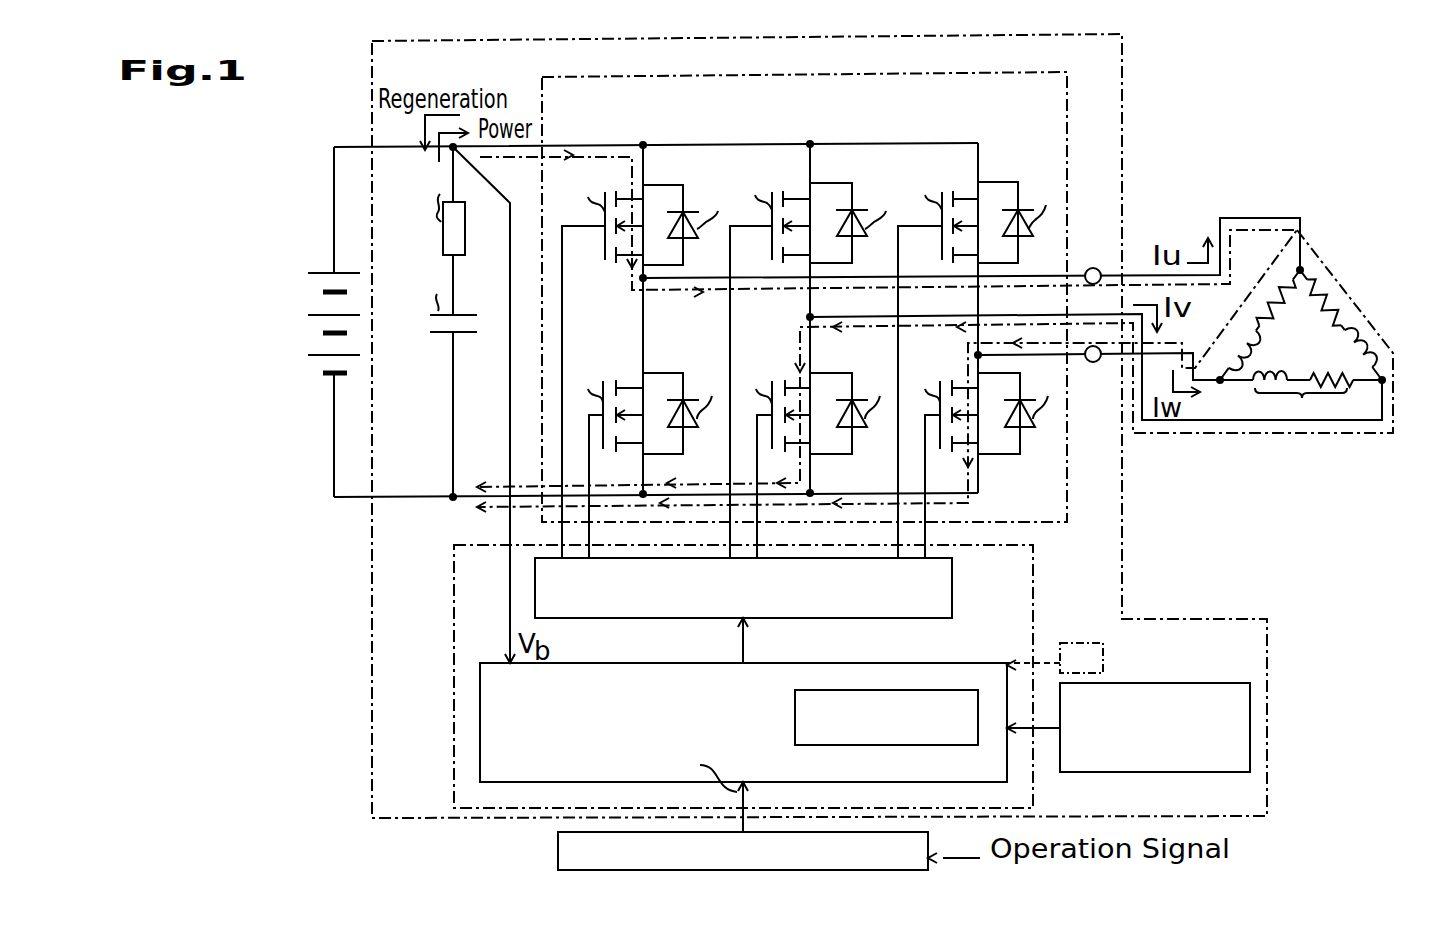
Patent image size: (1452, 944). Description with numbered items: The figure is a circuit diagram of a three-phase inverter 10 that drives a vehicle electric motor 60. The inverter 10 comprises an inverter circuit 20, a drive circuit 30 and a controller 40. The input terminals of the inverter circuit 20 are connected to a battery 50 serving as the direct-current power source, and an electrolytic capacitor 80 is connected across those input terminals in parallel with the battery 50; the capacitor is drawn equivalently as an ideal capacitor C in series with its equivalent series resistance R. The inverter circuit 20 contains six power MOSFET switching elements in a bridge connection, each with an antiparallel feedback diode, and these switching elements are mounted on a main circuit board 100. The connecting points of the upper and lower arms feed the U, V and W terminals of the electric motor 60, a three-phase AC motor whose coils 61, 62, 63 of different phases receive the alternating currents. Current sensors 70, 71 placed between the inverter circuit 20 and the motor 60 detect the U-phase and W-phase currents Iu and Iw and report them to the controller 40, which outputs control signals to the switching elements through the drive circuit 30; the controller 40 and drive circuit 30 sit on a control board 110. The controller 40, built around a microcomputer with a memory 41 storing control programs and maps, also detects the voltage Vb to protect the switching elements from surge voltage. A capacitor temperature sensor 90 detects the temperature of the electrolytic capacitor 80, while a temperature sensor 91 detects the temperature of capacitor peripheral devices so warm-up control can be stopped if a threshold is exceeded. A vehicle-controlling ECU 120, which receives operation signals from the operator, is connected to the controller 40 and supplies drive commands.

The three-phase inverter 10 is at (915, 33).
The inverter circuit 20 is at (992, 123).
The drive circuit 30 is at (952, 583).
The controller 40 is at (746, 709).
The memory 41 is at (795, 717).
The battery 50 is at (333, 273).
The electric motor 60 is at (1318, 345).
The coil 61 is at (1303, 331).
The coil 62 is at (1358, 312).
The coil 63 is at (1302, 398).
The current sensor 70 is at (1093, 268).
The current sensor 71 is at (1093, 362).
The electrolytic capacitor 80 is at (413, 234).
The capacitor temperature sensor 90 is at (1217, 683).
The temperature sensor 91 is at (1075, 643).
The main circuit board 100 is at (812, 72).
The control board 110 is at (1033, 785).
The vehicle-controlling ECU 120 is at (558, 855).